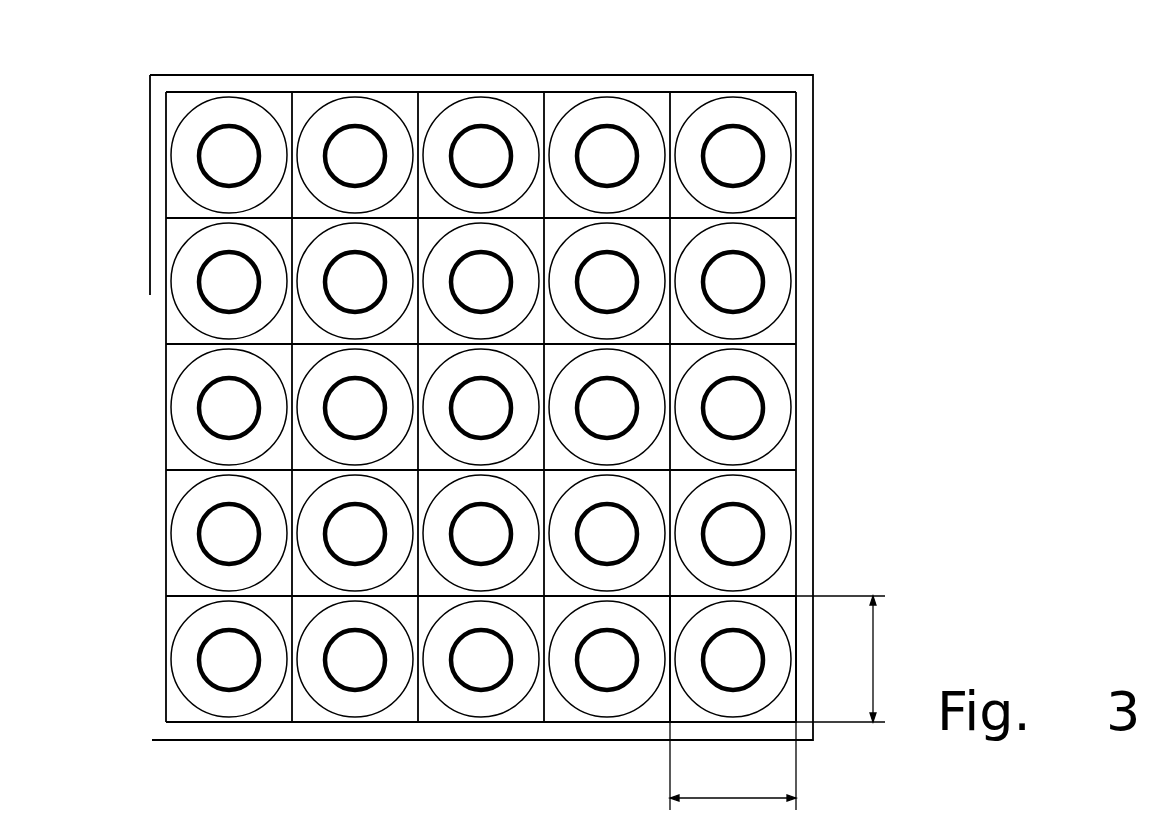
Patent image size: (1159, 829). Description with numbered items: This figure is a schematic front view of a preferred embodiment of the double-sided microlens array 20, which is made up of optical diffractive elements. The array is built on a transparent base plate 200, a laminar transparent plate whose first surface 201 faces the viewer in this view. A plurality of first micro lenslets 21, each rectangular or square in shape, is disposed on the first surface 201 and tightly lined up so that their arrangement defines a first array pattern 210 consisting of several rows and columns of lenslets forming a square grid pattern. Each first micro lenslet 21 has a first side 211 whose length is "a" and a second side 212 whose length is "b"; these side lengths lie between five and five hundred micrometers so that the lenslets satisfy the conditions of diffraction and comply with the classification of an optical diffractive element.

The double-sided microlens array 20 is at (494, 421).
The transparent base plate 200 is at (102, 185).
The first surface 201 is at (813, 86).
The first array pattern 210 is at (800, 240).
The first micro lenslet 21 is at (771, 614).
The first side 211 is at (792, 662).
The second side 212 is at (735, 723).